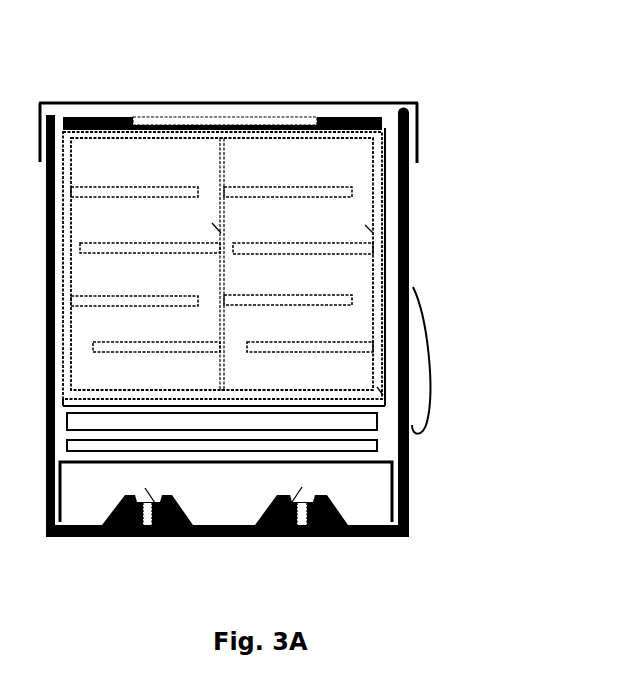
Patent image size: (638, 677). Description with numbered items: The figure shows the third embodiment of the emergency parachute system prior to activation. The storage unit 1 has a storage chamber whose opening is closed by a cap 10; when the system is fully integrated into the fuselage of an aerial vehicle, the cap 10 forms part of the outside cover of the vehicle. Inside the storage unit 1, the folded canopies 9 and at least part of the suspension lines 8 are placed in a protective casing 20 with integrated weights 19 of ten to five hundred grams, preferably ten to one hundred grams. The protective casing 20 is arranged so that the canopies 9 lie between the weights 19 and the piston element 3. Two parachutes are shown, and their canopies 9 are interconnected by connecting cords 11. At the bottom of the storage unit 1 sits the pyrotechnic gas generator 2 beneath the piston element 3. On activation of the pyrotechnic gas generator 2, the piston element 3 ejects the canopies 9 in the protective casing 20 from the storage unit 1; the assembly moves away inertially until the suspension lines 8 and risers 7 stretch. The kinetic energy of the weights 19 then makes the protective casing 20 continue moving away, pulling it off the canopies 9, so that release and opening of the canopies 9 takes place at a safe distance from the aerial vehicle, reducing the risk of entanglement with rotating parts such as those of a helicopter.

The storage unit 1 is at (418, 155).
The pyrotechnic gas generator 2 is at (267, 537).
The piston element 3 is at (407, 482).
The risers 7 is at (428, 387).
The suspension lines 8 is at (412, 367).
The canopies 9 is at (203, 170).
The cap 10 is at (287, 103).
The connecting cords 11 is at (163, 135).
The weights 19 is at (210, 122).
The protective casing 20 is at (383, 260).